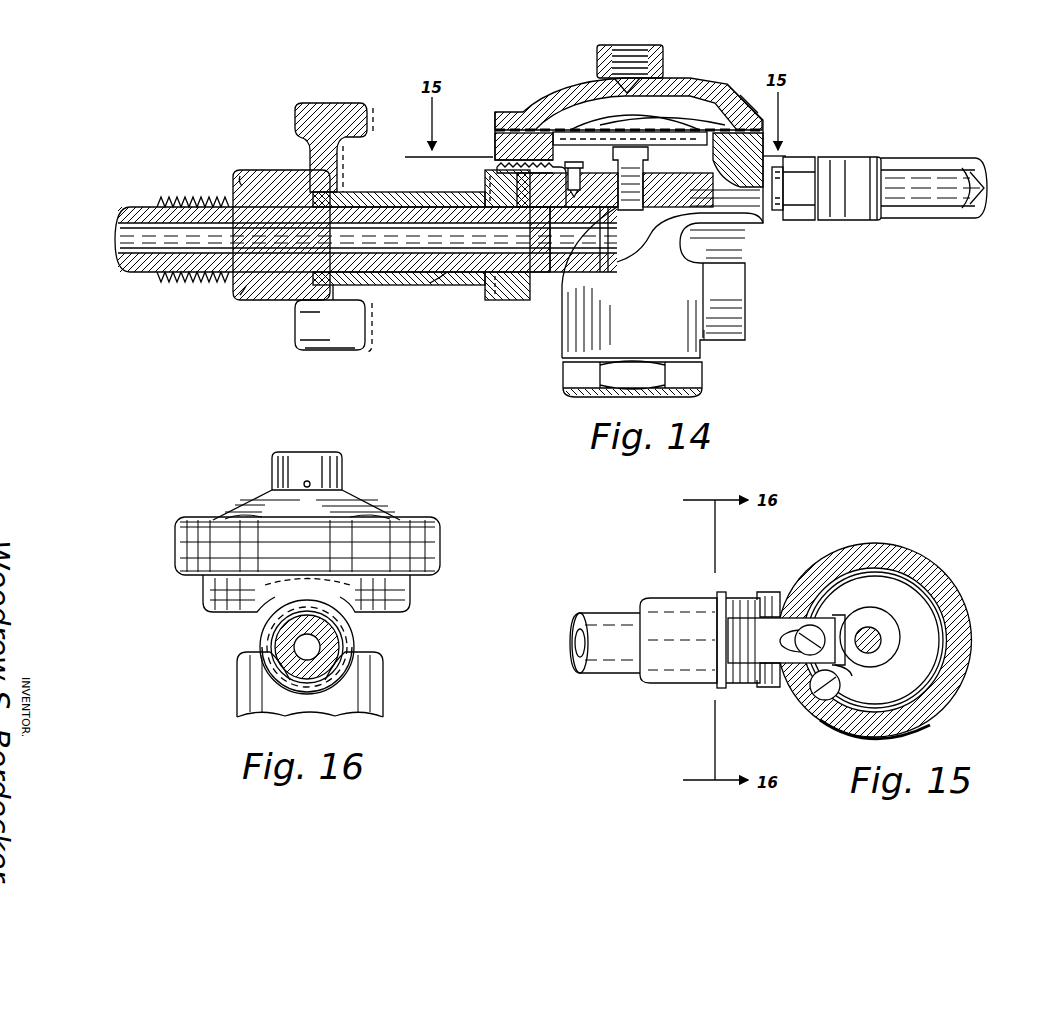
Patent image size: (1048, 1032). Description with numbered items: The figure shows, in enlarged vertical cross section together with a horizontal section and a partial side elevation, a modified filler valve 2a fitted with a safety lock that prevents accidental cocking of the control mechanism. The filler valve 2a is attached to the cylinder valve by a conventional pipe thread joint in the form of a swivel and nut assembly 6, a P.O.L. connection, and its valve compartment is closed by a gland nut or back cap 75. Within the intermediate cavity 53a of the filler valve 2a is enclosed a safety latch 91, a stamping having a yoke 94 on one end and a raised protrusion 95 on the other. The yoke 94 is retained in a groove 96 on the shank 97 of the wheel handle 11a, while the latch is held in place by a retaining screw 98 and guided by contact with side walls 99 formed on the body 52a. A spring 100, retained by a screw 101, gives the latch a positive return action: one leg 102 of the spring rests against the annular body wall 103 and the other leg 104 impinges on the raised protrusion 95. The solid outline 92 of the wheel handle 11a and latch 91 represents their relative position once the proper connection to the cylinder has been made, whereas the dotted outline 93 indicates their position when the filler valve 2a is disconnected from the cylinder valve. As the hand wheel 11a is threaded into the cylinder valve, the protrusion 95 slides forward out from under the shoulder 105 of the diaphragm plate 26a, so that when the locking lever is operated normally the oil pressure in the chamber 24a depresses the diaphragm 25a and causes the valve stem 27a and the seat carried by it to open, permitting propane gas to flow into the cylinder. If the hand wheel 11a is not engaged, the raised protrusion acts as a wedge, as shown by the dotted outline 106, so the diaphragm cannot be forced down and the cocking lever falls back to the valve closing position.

In FIG. 14, the filler valve 2a is at (725, 290).
In FIG. 16, the filler valve 2a is at (407, 600).
In FIG. 15, the filler valve 2a is at (960, 650).
In FIG. 14, the swivel and nut assembly 6 is at (240, 298).
In FIG. 14, the wheel handle 11a is at (332, 350).
In FIG. 14, the chamber 24a is at (590, 88).
In FIG. 14, the diaphragm 25a is at (516, 112).
In FIG. 16, the diaphragm 25a is at (440, 540).
In FIG. 14, the diaphragm plate 26a is at (738, 92).
In FIG. 14, the valve stem 27a is at (640, 212).
In FIG. 15, the valve stem 27a is at (884, 642).
In FIG. 14, the body 52a is at (750, 327).
In FIG. 16, the body 52a is at (386, 686).
In FIG. 15, the body 52a is at (943, 560).
In FIG. 14, the intermediate cavity 53a is at (786, 145).
In FIG. 15, the intermediate cavity 53a is at (868, 610).
In FIG. 14, the back cap 75 is at (700, 380).
In FIG. 14, the safety latch 91 is at (490, 130).
In FIG. 15, the safety latch 91 is at (762, 630).
In FIG. 14, the solid outline 92 is at (490, 176).
In FIG. 14, the dotted outline 93 is at (374, 328).
In FIG. 14, the yoke 94 is at (495, 237).
In FIG. 16, the yoke 94 is at (352, 638).
In FIG. 15, the yoke 94 is at (720, 690).
In FIG. 14, the raised protrusion 95 is at (618, 130).
In FIG. 15, the raised protrusion 95 is at (845, 632).
In FIG. 14, the groove 96 is at (497, 274).
In FIG. 16, the groove 96 is at (272, 655).
In FIG. 15, the groove 96 is at (719, 600).
In FIG. 14, the shank 97 is at (428, 286).
In FIG. 16, the shank 97 is at (285, 665).
In FIG. 15, the shank 97 is at (672, 612).
In FIG. 14, the retaining screw 98 is at (582, 198).
In FIG. 15, the retaining screw 98 is at (812, 625).
In FIG. 16, the side walls 99 is at (265, 585).
In FIG. 15, the side walls 99 is at (780, 620).
In FIG. 14, the spring 100 is at (570, 120).
In FIG. 15, the spring 100 is at (838, 664).
In FIG. 15, the screw 101 is at (872, 738).
In FIG. 15, the leg 102 is at (825, 700).
In FIG. 15, the annular body wall 103 is at (940, 685).
In FIG. 15, the leg 104 is at (832, 625).
In FIG. 14, the shoulder 105 is at (672, 120).
In FIG. 14, the dotted outline 106 is at (692, 182).